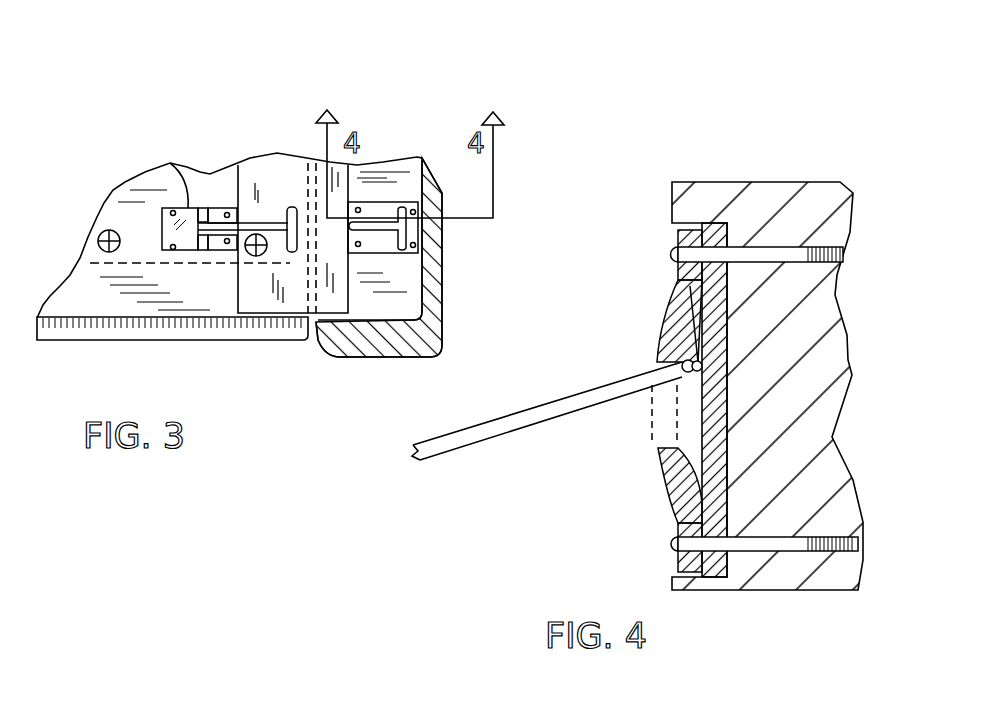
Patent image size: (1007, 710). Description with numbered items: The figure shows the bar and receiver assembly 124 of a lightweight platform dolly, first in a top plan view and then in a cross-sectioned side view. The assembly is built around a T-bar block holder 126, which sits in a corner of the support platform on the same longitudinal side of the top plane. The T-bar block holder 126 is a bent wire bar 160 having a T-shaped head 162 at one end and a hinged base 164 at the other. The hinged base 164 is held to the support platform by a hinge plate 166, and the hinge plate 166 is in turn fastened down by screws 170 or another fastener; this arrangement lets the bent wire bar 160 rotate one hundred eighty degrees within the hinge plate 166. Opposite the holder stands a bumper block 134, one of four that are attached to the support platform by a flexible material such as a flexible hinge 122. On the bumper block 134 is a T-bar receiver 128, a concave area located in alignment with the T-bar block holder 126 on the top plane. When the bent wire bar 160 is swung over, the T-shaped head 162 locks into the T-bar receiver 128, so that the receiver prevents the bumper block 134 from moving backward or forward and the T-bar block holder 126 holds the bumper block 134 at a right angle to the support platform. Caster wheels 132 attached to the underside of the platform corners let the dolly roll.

In FIG. 3, the flexible hinge 122 is at (367, 333).
In FIG. 3, the bar and receiver assembly 124 is at (258, 92).
In FIG. 3, the T-bar block holder 126 is at (170, 163).
In FIG. 3, the T-bar receiver 128 is at (420, 228).
In FIG. 4, the T-bar receiver 128 is at (673, 287).
In FIG. 3, the caster wheels 132 is at (85, 252).
In FIG. 3, the bumper block 134 is at (400, 308).
In FIG. 4, the bumper block 134 is at (672, 203).
In FIG. 3, the bent wire bar 160 is at (268, 222).
In FIG. 4, the bent wire bar 160 is at (578, 410).
In FIG. 3, the T-shaped head 162 is at (293, 253).
In FIG. 4, the T-shaped head 162 is at (653, 338).
In FIG. 3, the hinged base 164 is at (207, 210).
In FIG. 3, the hinge plate 166 is at (217, 250).
In FIG. 3, the screws 170 is at (110, 257).
In FIG. 4, the screws 170 is at (673, 255).